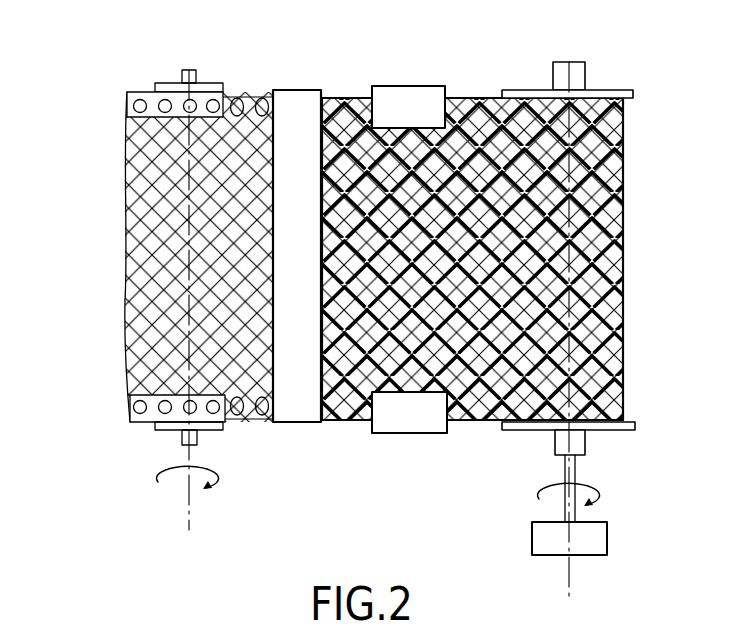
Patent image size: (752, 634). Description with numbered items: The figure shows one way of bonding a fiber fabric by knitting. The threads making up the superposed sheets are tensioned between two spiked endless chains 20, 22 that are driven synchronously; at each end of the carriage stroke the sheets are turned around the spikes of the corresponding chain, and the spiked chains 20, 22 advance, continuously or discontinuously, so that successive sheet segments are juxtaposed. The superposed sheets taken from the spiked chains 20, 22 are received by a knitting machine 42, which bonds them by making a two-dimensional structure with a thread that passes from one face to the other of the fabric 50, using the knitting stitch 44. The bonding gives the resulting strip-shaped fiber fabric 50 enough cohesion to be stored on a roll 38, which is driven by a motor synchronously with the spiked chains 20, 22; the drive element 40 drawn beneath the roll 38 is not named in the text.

The spiked endless chain 20 is at (130, 412).
The spiked endless chain 22 is at (125, 101).
The roll 38 is at (528, 95).
The motor 40 is at (552, 548).
The knitting machine 42 is at (297, 97).
The knitting stitch 44 is at (605, 210).
The strip-shaped fiber fabric 50 is at (493, 426).